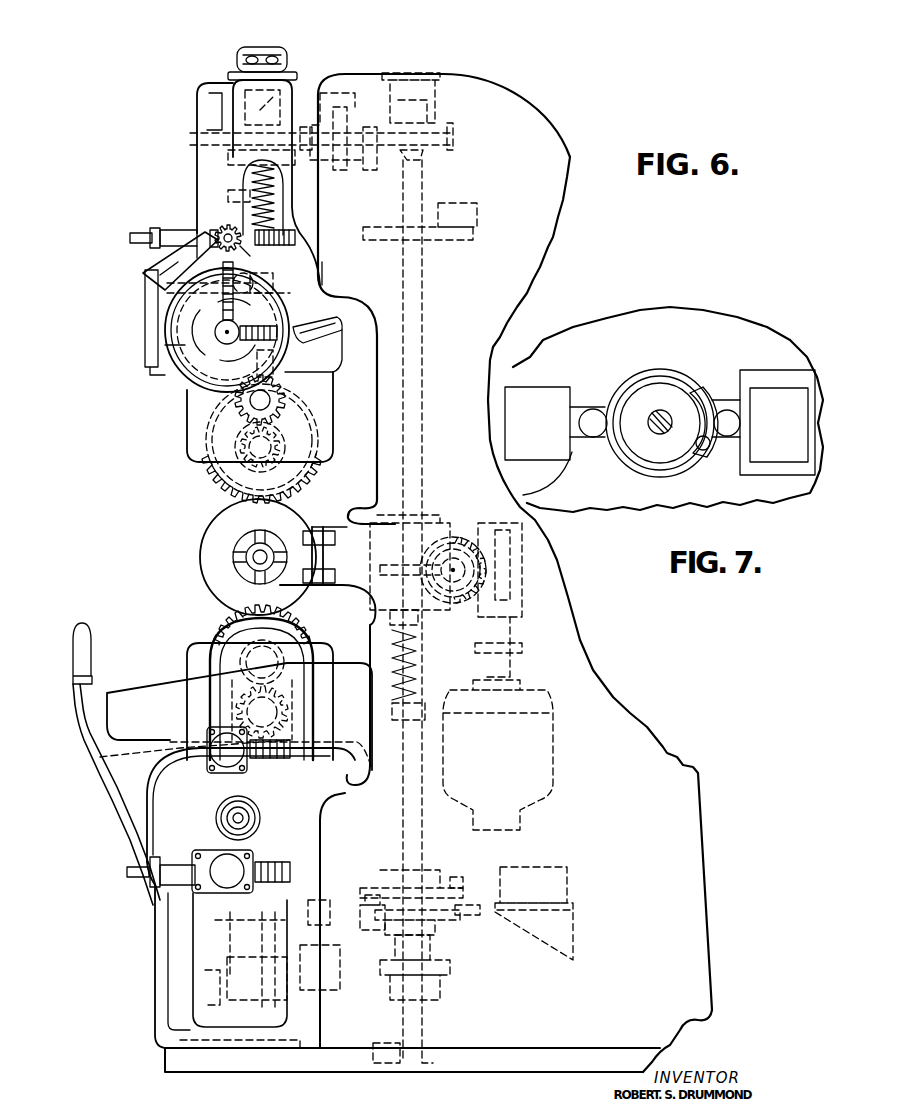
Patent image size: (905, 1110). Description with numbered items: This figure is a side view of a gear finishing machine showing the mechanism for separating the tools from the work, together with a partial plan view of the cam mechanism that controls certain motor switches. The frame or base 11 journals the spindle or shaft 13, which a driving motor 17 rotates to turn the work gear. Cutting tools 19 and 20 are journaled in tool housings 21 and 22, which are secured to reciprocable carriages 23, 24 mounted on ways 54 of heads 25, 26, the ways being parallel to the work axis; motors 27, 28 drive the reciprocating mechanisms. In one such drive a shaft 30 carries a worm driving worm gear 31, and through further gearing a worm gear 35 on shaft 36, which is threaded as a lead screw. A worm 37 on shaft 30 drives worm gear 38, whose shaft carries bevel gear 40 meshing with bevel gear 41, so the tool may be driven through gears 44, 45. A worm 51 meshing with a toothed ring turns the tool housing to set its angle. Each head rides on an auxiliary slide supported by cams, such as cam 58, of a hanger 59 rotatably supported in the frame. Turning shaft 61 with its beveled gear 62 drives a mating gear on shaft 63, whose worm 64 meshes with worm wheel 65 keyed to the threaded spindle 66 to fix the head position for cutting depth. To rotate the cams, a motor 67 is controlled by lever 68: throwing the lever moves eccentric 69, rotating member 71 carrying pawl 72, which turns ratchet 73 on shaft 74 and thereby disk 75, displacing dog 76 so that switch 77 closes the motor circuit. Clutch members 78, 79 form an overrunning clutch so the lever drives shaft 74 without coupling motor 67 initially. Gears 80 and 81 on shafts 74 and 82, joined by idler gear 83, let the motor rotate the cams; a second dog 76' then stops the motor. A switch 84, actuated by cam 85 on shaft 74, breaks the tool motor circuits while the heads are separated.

In FIG. 6, the frame or base 11 is at (687, 808).
In FIG. 6, the spindle or shaft 13 is at (235, 535).
In FIG. 6, the driving motor 17 is at (200, 558).
In FIG. 6, the cutting tool 19 is at (295, 475).
In FIG. 6, the cutting tool 20 is at (215, 622).
In FIG. 6, the tool housing 21 is at (192, 427).
In FIG. 6, the tool housing 22 is at (197, 662).
In FIG. 6, the reciprocable carriage 23 is at (155, 325).
In FIG. 6, the reciprocable carriage 24 is at (120, 718).
In FIG. 6, the head 25 is at (197, 110).
In FIG. 6, the head 26 is at (190, 955).
In FIG. 6, the motor 27 is at (180, 345).
In FIG. 6, the motor 28 is at (185, 790).
In FIG. 6, the shaft 30 is at (227, 330).
In FIG. 6, the worm gear 31 is at (243, 322).
In FIG. 6, the worm gear 35 is at (262, 286).
In FIG. 6, the shaft 36 is at (339, 273).
In FIG. 6, the worm 37 is at (222, 338).
In FIG. 6, the worm gear 38 is at (313, 332).
In FIG. 6, the bevel gear 40 is at (227, 332).
In FIG. 6, the bevel gear 41 is at (272, 392).
In FIG. 6, the gear 44 is at (285, 407).
In FIG. 6, the gear 45 is at (272, 421).
In FIG. 6, the worm 51 is at (228, 157).
In FIG. 6, the ways 54 is at (175, 833).
In FIG. 6, the cam 58 is at (228, 192).
In FIG. 6, the hanger 59 is at (290, 83).
In FIG. 6, the shaft 61 is at (143, 233).
In FIG. 6, the beveled gear 62 is at (228, 245).
In FIG. 6, the shaft 63 is at (250, 250).
In FIG. 6, the worm 64 is at (228, 291).
In FIG. 6, the worm wheel 65 is at (295, 236).
In FIG. 6, the threaded spindle 66 is at (270, 210).
In FIG. 6, the motor 67 is at (530, 735).
In FIG. 6, the lever 68 is at (155, 923).
In FIG. 6, the eccentric 69 is at (388, 1063).
In FIG. 6, the member 71 is at (432, 950).
In FIG. 6, the pawl 72 is at (370, 905).
In FIG. 6, the ratchet 73 is at (440, 935).
In FIG. 6, the shaft 74 is at (426, 390).
In FIG. 7, the shaft 74 is at (665, 417).
In FIG. 6, the disk 75 is at (433, 888).
In FIG. 7, the disk 75 is at (635, 463).
In FIG. 7, the dog 76 is at (714, 405).
In FIG. 6, the second dog 76' is at (471, 867).
In FIG. 7, the second dog 76' is at (716, 461).
In FIG. 6, the switch 77 is at (563, 867).
In FIG. 7, the switch 77 is at (770, 413).
In FIG. 6, the clutch member 78 is at (430, 615).
In FIG. 6, the clutch member 79 is at (425, 643).
In FIG. 6, the gear 80 is at (453, 140).
In FIG. 6, the gear 81 is at (222, 137).
In FIG. 6, the shaft 82 is at (265, 47).
In FIG. 6, the idler gear 83 is at (365, 160).
In FIG. 6, the switch 84 is at (330, 850).
In FIG. 7, the switch 84 is at (553, 447).
In FIG. 6, the cam 85 is at (470, 915).
In FIG. 7, the cam 85 is at (608, 433).